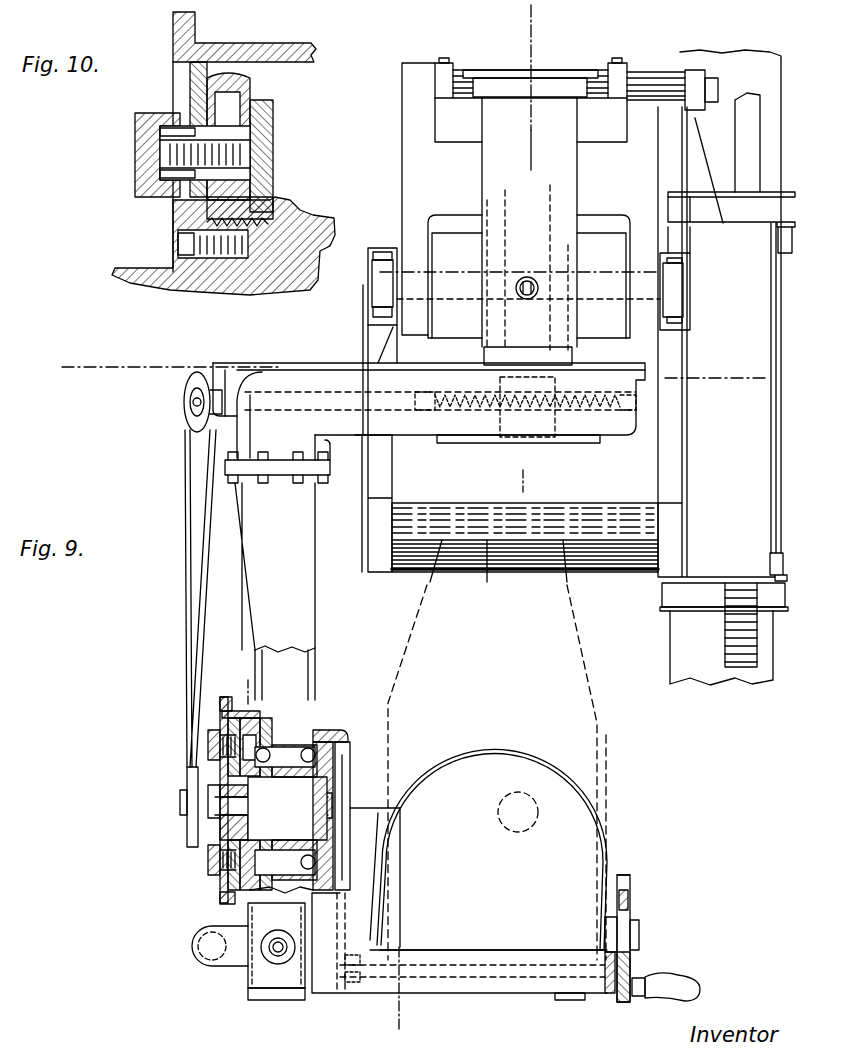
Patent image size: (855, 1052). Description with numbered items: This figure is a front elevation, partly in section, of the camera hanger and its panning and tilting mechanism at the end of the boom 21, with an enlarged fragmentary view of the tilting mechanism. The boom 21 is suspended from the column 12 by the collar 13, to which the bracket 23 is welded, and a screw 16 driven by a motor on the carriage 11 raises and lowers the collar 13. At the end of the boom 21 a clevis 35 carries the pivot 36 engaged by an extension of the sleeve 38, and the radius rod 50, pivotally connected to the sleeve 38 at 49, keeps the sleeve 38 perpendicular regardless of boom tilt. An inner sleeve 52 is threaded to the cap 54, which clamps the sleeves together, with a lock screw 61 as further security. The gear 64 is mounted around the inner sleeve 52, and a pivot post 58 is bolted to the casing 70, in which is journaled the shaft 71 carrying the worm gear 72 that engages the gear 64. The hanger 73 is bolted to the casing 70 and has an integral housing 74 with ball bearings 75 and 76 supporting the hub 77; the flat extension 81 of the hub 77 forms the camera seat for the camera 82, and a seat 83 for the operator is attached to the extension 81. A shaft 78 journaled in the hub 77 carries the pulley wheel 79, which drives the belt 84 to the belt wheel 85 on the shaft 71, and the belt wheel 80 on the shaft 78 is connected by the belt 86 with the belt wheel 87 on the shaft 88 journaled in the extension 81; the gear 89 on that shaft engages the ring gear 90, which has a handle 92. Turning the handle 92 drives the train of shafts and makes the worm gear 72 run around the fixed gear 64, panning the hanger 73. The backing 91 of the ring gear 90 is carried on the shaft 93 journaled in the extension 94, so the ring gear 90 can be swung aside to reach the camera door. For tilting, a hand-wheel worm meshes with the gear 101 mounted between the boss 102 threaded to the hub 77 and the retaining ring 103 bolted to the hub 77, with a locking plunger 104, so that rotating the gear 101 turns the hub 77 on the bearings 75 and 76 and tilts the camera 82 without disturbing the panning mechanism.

In FIG. 9, the carriage 11 is at (248, 680).
In FIG. 9, the column 12 is at (70, 364).
In FIG. 9, the collar 13 is at (536, 17).
In FIG. 9, the screw 16 is at (723, 660).
In FIG. 9, the boom 21 is at (404, 150).
In FIG. 9, the bracket 23 is at (495, 550).
In FIG. 9, the clevis 35 is at (410, 237).
In FIG. 9, the pivot 36 is at (559, 276).
In FIG. 9, the sleeve 38 is at (578, 190).
In FIG. 9, the pivotal connection 49 is at (646, 76).
In FIG. 9, the radius rod 50 is at (695, 78).
In FIG. 9, the inner sleeve 52 is at (574, 356).
In FIG. 9, the cap 54 is at (568, 73).
In FIG. 9, the pivot post 58 is at (505, 226).
In FIG. 9, the lock screw 61 is at (527, 277).
In FIG. 9, the gear 64 is at (600, 405).
In FIG. 9, the casing 70 is at (408, 432).
In FIG. 9, the shaft 71 is at (363, 405).
In FIG. 9, the worm gear 72 is at (480, 400).
In FIG. 9, the hanger 73 is at (305, 622).
In FIG. 10, the housing 74 is at (250, 52).
In FIG. 9, the housing 74 is at (220, 905).
In FIG. 9, the ball bearing 75 is at (283, 813).
In FIG. 9, the ball bearing 76 is at (287, 814).
In FIG. 10, the hub 77 is at (323, 226).
In FIG. 9, the hub 77 is at (312, 748).
In FIG. 9, the shaft 78 is at (286, 807).
In FIG. 9, the pulley wheel 79 is at (186, 848).
In FIG. 9, the belt wheel 80 is at (350, 772).
In FIG. 9, the extension 81 is at (478, 950).
In FIG. 9, the camera 82 is at (598, 682).
In FIG. 9, the seat 83 is at (532, 760).
In FIG. 9, the belt 84 is at (185, 628).
In FIG. 9, the belt wheel 85 is at (185, 386).
In FIG. 9, the belt 86 is at (345, 862).
In FIG. 9, the belt wheel 87 is at (337, 988).
In FIG. 9, the shaft 88 is at (526, 966).
In FIG. 9, the gear 89 is at (635, 958).
In FIG. 9, the ring gear 90 is at (630, 898).
In FIG. 9, the backing 91 is at (632, 878).
In FIG. 9, the handle 92 is at (682, 980).
In FIG. 9, the shaft 93 is at (605, 928).
In FIG. 9, the extension 94 is at (623, 874).
In FIG. 10, the gear 101 is at (245, 82).
In FIG. 9, the gear 101 is at (262, 720).
In FIG. 10, the boss 102 is at (273, 133).
In FIG. 9, the boss 102 is at (265, 745).
In FIG. 10, the retaining ring 103 is at (195, 94).
In FIG. 9, the retaining ring 103 is at (228, 722).
In FIG. 10, the locking plunger 104 is at (142, 163).
In FIG. 9, the locking plunger 104 is at (215, 748).